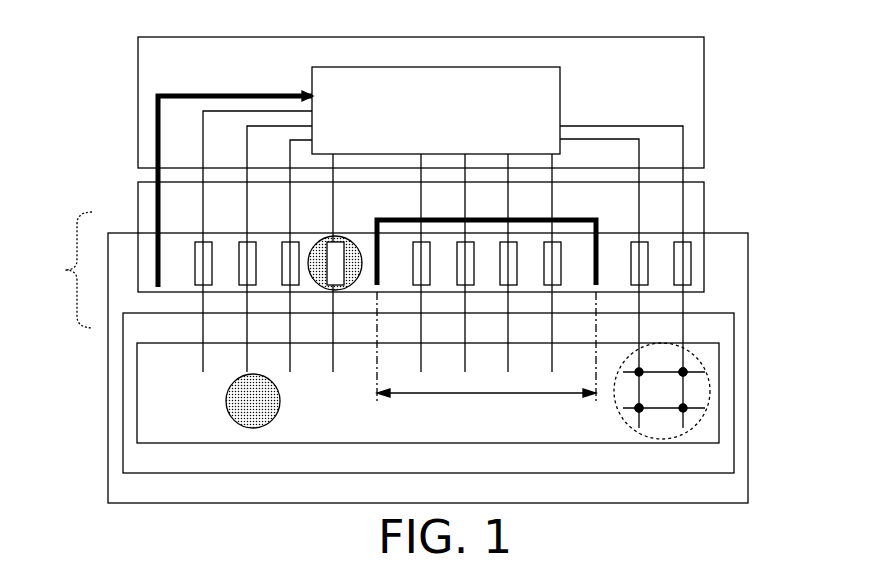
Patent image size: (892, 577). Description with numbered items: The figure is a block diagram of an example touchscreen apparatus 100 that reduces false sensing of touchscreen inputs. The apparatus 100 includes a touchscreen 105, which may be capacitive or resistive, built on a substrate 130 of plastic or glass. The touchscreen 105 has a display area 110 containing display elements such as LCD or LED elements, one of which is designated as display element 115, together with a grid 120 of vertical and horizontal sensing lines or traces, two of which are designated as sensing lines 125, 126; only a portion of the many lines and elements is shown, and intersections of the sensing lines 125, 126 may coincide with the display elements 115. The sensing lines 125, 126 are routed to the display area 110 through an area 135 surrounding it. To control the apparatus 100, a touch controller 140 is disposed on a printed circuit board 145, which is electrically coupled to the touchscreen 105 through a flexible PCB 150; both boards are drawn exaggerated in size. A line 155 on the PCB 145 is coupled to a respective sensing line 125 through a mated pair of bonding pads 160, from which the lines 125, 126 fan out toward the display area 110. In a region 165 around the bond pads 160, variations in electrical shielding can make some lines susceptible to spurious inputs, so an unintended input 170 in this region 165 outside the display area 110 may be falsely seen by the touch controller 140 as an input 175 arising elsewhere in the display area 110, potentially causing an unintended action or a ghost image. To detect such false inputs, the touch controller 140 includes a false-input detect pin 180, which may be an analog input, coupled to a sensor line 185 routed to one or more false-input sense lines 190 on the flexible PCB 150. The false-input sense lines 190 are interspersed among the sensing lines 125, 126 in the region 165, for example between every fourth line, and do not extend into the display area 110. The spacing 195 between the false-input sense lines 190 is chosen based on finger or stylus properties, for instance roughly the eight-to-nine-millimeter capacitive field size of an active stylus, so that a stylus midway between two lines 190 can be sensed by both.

The touchscreen apparatus 100 is at (94, 45).
The touchscreen 105 is at (457, 496).
The display area 110 is at (195, 440).
The display element 115 is at (609, 422).
The grid 120 is at (675, 400).
The sensing line 125 is at (710, 372).
The sensing line 126 is at (746, 393).
The substrate 130 is at (195, 498).
The area 135 is at (195, 470).
The touch controller 140 is at (519, 133).
The printed circuit board 145 is at (689, 70).
The flexible PCB 150 is at (624, 211).
The line 155 is at (443, 261).
The bonding pad pair 160 is at (718, 245).
The region 165 is at (65, 270).
The input 170 is at (349, 271).
The input 175 is at (265, 411).
The false-input detect pin 180 is at (347, 98).
The line 185 is at (235, 182).
The false-input sense line 190 is at (330, 229).
The spacing 195 is at (486, 347).